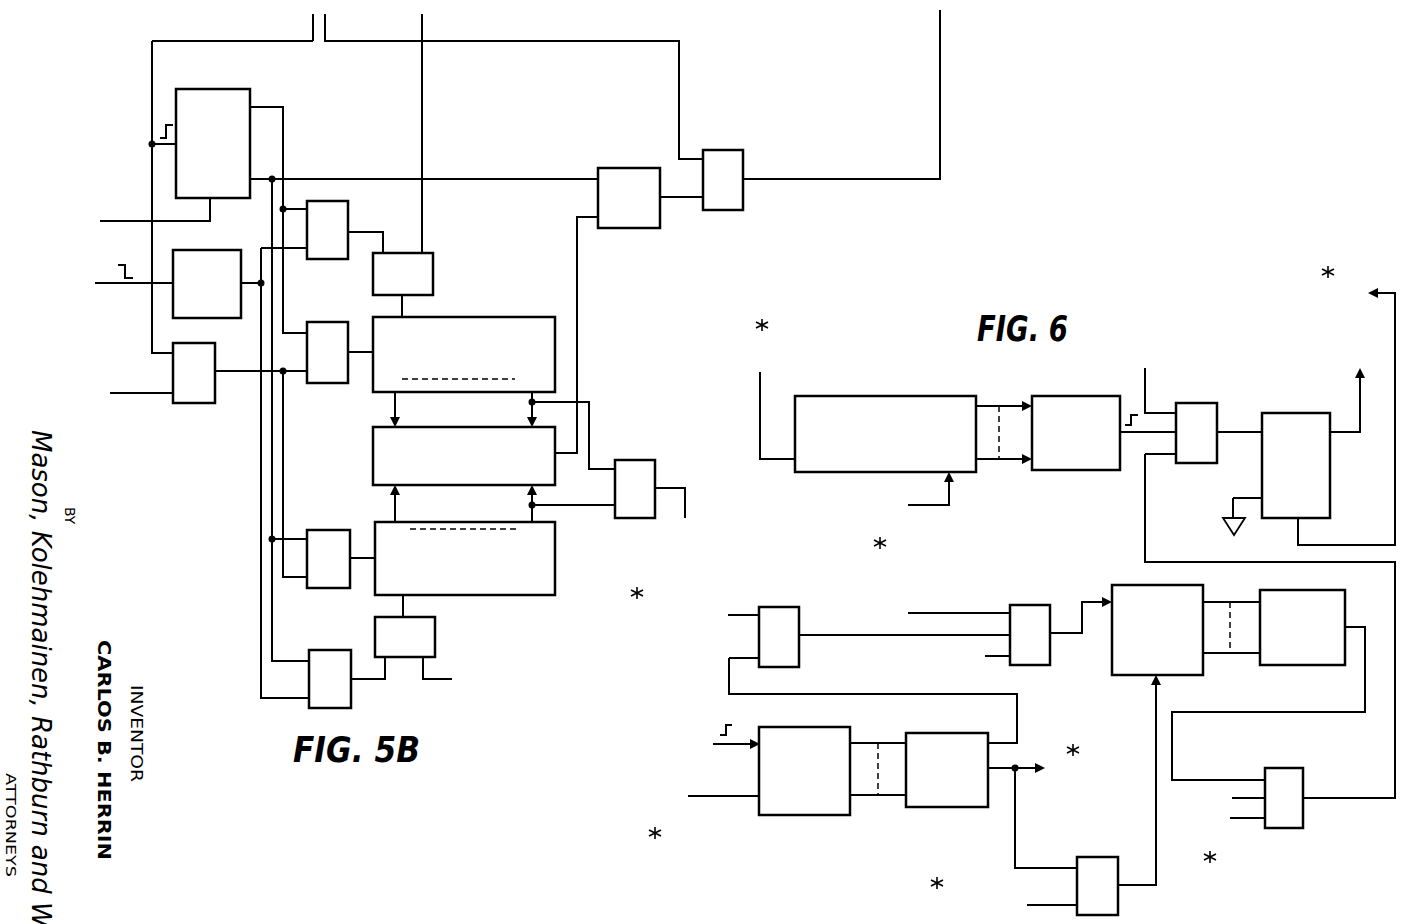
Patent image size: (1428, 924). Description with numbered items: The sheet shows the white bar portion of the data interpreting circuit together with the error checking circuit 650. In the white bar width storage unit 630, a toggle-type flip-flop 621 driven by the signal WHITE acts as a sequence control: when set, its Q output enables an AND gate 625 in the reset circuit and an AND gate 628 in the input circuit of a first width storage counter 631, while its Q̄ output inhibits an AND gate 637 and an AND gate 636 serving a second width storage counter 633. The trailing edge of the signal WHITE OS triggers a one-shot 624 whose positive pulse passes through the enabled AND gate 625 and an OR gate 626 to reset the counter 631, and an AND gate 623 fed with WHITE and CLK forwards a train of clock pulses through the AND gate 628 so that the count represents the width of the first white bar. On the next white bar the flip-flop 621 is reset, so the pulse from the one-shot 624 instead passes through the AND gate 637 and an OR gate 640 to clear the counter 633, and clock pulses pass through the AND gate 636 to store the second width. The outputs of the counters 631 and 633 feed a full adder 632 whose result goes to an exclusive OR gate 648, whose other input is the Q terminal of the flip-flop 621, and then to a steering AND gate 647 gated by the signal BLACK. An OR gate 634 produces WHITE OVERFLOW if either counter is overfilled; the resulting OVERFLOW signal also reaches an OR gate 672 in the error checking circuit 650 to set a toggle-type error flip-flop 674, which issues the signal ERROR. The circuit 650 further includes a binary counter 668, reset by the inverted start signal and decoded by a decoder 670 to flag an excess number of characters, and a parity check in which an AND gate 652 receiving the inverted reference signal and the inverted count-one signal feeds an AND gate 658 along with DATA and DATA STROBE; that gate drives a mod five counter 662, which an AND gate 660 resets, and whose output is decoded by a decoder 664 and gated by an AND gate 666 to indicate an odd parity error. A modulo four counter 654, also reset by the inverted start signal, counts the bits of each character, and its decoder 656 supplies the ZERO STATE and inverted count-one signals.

In FIG. 5B, the toggle-type flip-flop 621 is at (232, 89).
In FIG. 5B, the AND gate 623 is at (183, 403).
In FIG. 5B, the one-shot or monostable circuit 624 is at (207, 250).
In FIG. 5B, the AND gate 625 is at (348, 222).
In FIG. 5B, the OR gate 626 is at (433, 267).
In FIG. 5B, the AND gate 628 is at (340, 322).
In FIG. 5B, the white bar width storage unit 630 is at (660, 280).
In FIG. 5B, the width storage counter 631 is at (453, 317).
In FIG. 5B, the full adder 632 is at (373, 447).
In FIG. 5B, the width storage counter 633 is at (517, 595).
In FIG. 5B, the OR gate 634 is at (638, 460).
In FIG. 5B, the AND gate 636 is at (340, 530).
In FIG. 5B, the AND gate 637 is at (335, 650).
In FIG. 5B, the OR gate 640 is at (435, 632).
In FIG. 5B, the steering AND gate 647 is at (742, 130).
In FIG. 5B, the exclusive OR gate 648 is at (633, 168).
In FIG. 6, the error checking or detecting circuit 650 is at (898, 858).
In FIG. 6, the AND gate 652 is at (785, 607).
In FIG. 6, the modulo four counter 654 is at (807, 816).
In FIG. 6, the decoder 656 is at (963, 807).
In FIG. 6, the AND gate 658 is at (1020, 605).
In FIG. 6, the AND gate 660 is at (1124, 826).
In FIG. 6, the mod 5 counter 662 is at (1125, 585).
In FIG. 6, the decoder 664 is at (1317, 665).
In FIG. 6, the AND gate 666 is at (1283, 828).
In FIG. 6, the binary counter 668 is at (905, 396).
In FIG. 6, the decoder 670 is at (1053, 396).
In FIG. 6, the OR gate 672 is at (1188, 403).
In FIG. 6, the toggle-type error flip-flop 674 is at (1275, 413).